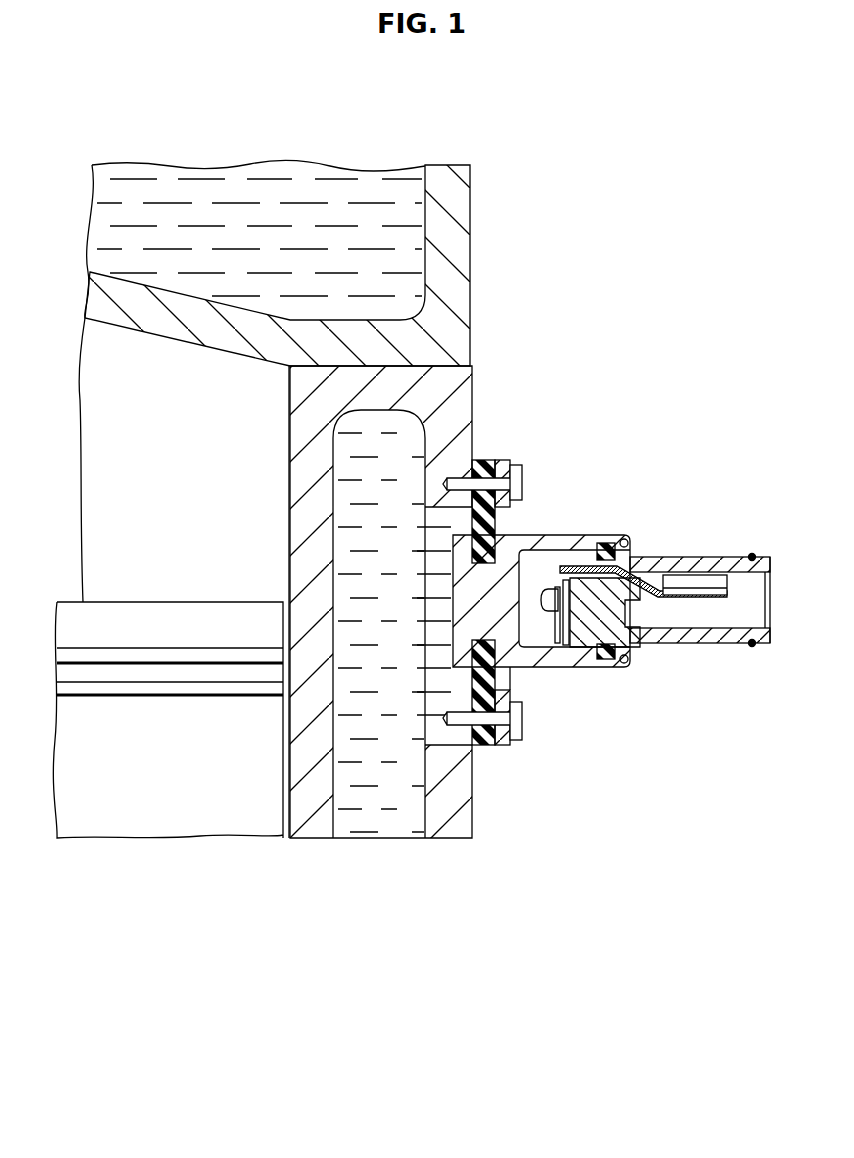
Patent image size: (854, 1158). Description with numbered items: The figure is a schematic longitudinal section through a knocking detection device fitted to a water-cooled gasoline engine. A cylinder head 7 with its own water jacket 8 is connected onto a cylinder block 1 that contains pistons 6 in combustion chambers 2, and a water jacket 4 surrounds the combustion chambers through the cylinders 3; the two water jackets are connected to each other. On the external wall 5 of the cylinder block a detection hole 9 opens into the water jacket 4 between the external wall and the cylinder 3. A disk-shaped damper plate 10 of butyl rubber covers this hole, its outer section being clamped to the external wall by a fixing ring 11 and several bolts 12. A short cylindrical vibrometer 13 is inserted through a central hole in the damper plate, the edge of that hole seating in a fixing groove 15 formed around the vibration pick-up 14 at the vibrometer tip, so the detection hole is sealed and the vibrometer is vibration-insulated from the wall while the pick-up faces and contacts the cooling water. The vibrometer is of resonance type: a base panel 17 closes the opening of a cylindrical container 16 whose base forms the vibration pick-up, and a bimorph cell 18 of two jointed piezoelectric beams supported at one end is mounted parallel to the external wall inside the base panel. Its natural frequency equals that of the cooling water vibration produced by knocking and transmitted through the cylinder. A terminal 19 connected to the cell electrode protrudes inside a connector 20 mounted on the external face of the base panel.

The cylinder block 1 is at (439, 597).
The combustion chamber 2 is at (120, 481).
The cylinder 3 is at (305, 427).
The water jacket 4 is at (398, 803).
The external wall 5 is at (462, 407).
The piston 6 is at (202, 818).
The cylinder head 7 is at (498, 246).
The water jacket 8 is at (385, 183).
The detection hole 9 is at (440, 507).
The damper plate 10 is at (483, 460).
The fixing ring 11 is at (498, 462).
The bolt 12 is at (523, 471).
The vibrometer 13 is at (586, 602).
The vibration pick-up 14 is at (452, 632).
The fixing groove 15 is at (400, 760).
The cylindrical container 16 is at (610, 535).
The base panel 17 is at (622, 660).
The bimorph cell 18 is at (562, 645).
The terminal 19 is at (711, 575).
The connector 20 is at (751, 553).